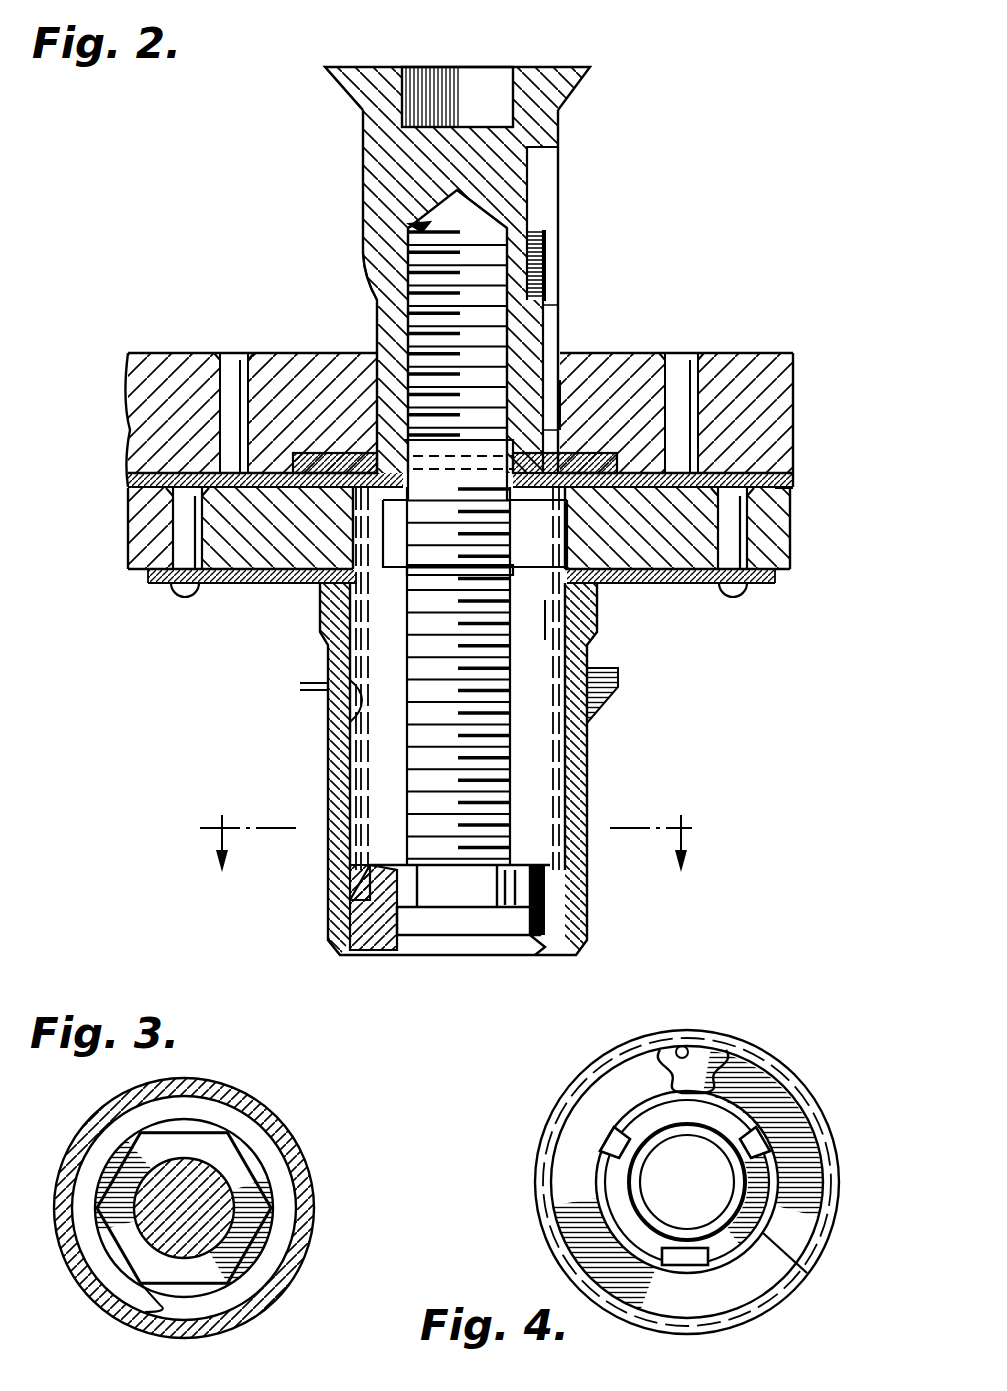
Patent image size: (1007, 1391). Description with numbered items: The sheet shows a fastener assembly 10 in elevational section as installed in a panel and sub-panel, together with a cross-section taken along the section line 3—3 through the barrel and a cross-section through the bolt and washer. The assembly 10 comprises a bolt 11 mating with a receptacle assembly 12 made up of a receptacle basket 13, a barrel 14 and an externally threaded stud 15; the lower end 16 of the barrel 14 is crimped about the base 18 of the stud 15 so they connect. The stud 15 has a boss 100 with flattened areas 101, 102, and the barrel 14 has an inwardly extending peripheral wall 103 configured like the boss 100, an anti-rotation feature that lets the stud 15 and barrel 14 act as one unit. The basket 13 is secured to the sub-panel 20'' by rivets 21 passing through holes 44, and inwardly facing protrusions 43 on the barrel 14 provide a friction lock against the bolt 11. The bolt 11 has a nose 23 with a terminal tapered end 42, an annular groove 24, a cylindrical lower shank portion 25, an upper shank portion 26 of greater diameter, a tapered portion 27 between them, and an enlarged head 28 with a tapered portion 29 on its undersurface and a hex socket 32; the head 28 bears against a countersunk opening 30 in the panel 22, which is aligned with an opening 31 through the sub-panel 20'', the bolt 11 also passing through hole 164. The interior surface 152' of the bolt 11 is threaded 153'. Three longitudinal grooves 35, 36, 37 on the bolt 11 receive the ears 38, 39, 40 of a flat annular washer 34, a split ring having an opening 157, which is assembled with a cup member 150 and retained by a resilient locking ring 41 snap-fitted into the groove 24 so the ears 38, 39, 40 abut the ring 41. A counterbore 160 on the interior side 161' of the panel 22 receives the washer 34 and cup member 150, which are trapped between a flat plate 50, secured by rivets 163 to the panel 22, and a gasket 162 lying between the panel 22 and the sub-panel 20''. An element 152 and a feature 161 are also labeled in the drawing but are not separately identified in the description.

In FIG. 2, the fastener assembly 10 is at (695, 213).
In FIG. 2, the bolt 11 is at (363, 160).
In FIG. 4, the bolt 11 is at (622, 1205).
In FIG. 2, the receptacle assembly 12 is at (598, 770).
In FIG. 2, the receptacle bracket or basket 13 is at (610, 690).
In FIG. 2, the barrel 14 is at (322, 797).
In FIG. 3, the barrel 14 is at (320, 1165).
In FIG. 2, the externally threaded stud 15 is at (512, 830).
In FIG. 3, the externally threaded stud 15 is at (165, 1192).
In FIG. 2, the lower end of barrel 16 is at (338, 952).
In FIG. 2, the base of stud 18 is at (455, 925).
In FIG. 2, the substructure or sub-panel 20'' is at (484, 577).
In FIG. 2, the rivets 21 is at (165, 596).
In FIG. 2, the panel 22 is at (790, 353).
In FIG. 2, the nose 23 is at (368, 590).
In FIG. 4, the nose 23 is at (807, 1273).
In FIG. 2, the annular groove 24 is at (442, 475).
In FIG. 2, the lower shank portion 25 is at (545, 302).
In FIG. 2, the upper shank portion 26 is at (558, 165).
In FIG. 2, the tapered portion 27 is at (370, 270).
In FIG. 2, the enlarged head 28 is at (553, 67).
In FIG. 2, the tapered portion of head undersurface 29 is at (345, 82).
In FIG. 2, the countersunk opening 30 is at (352, 448).
In FIG. 2, the opening through sub-panel 31 is at (545, 600).
In FIG. 2, the hex socket 32 is at (425, 70).
In FIG. 2, the flat annular washer or ring 34 is at (372, 400).
In FIG. 4, the flat annular washer or ring 34 is at (800, 1192).
In FIG. 4, the longitudinal groove 35 is at (606, 1152).
In FIG. 2, the longitudinal groove 36 is at (545, 152).
In FIG. 4, the longitudinal groove 36 is at (746, 1135).
In FIG. 4, the longitudinal groove 37 is at (698, 1270).
In FIG. 4, the ear 38 is at (675, 1277).
In FIG. 4, the ear 39 is at (758, 1156).
In FIG. 4, the ear 40 is at (612, 1133).
In FIG. 2, the annular resilient locking ring 41 is at (335, 585).
In FIG. 4, the annular resilient locking ring 41 is at (712, 1092).
In FIG. 2, the terminal tapered end 42 is at (733, 585).
In FIG. 2, the inwardly facing protrusions 43 is at (328, 700).
In FIG. 2, the holes 44 is at (186, 600).
In FIG. 2, the flat plate 50 is at (790, 488).
In FIG. 2, the boss 100 is at (378, 928).
In FIG. 3, the boss 100 is at (243, 1278).
In FIG. 2, the flattened area 101 is at (485, 896).
In FIG. 3, the flattened area 101 is at (160, 1298).
In FIG. 3, the flattened area 102 is at (188, 1133).
In FIG. 2, the inwardly extending peripheral wall 103 is at (352, 892).
In FIG. 3, the inwardly extending peripheral wall 103 is at (282, 1220).
In FIG. 2, the cup member 150 is at (298, 458).
In FIG. 4, the cup member 150 is at (742, 1040).
In FIG. 2, the nut 152 is at (464, 539).
In FIG. 2, the interior surface of bolt 152' is at (321, 205).
In FIG. 2, the threads 153' is at (561, 220).
In FIG. 4, the opening of split ring 157 is at (676, 1050).
In FIG. 2, the counterbore 160 is at (128, 458).
In FIG. 2, the panel portion 161 is at (636, 369).
In FIG. 2, the blind or interior side of panel 161' is at (78, 528).
In FIG. 2, the gasket 162 is at (240, 588).
In FIG. 2, the rivets 163 is at (230, 385).
In FIG. 2, the hole 164 is at (530, 430).
In FIG. 2, the section line 3— 3 is at (440, 838).